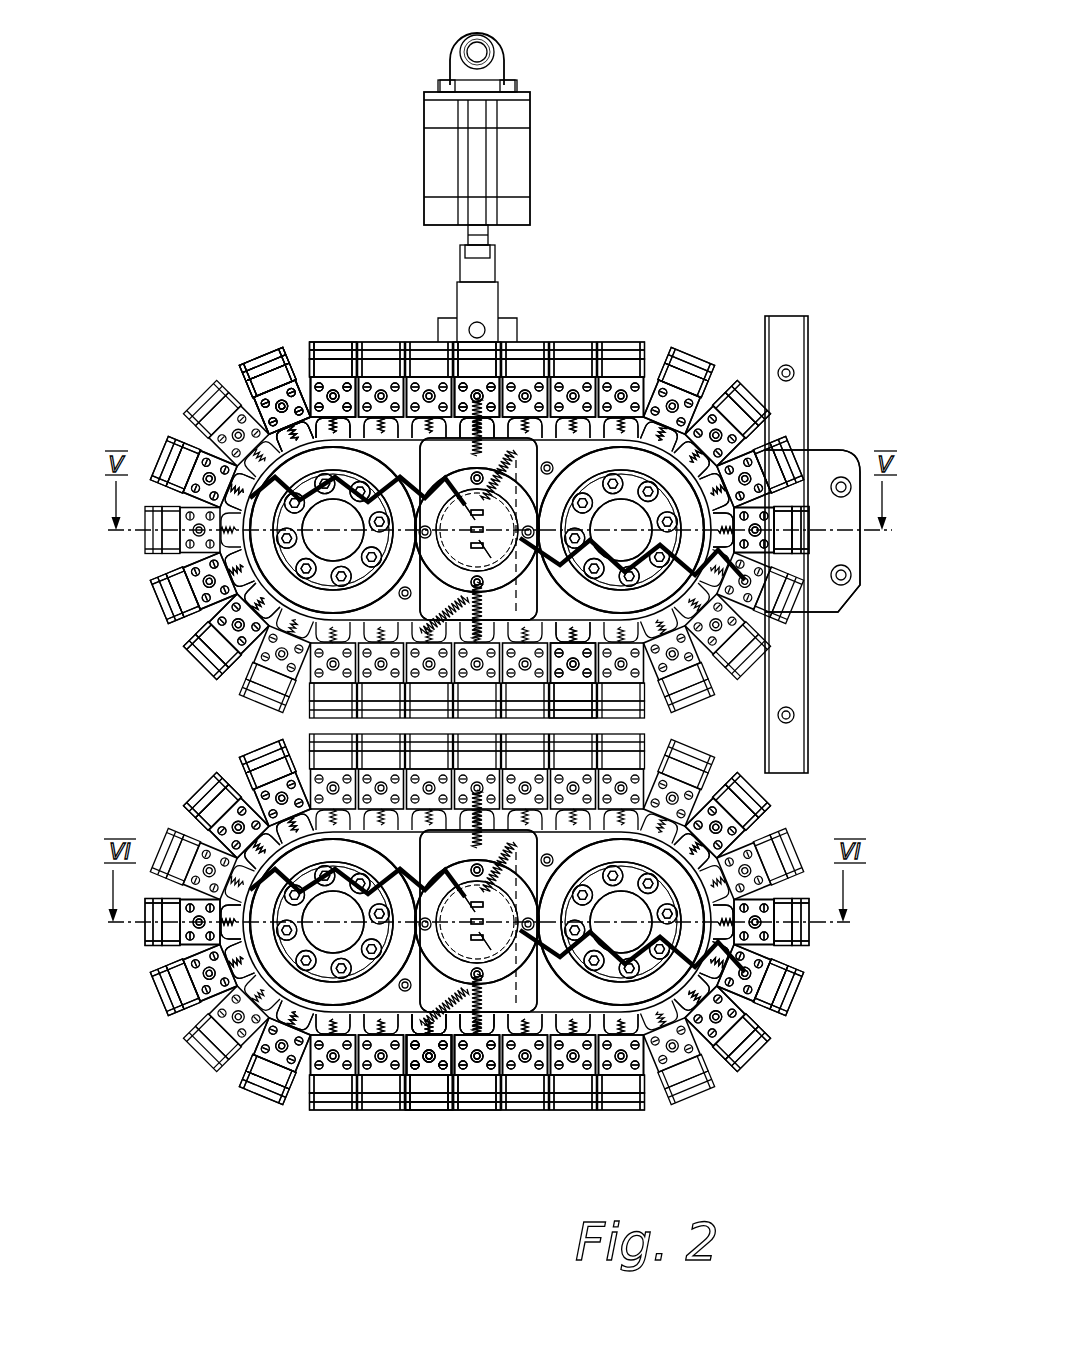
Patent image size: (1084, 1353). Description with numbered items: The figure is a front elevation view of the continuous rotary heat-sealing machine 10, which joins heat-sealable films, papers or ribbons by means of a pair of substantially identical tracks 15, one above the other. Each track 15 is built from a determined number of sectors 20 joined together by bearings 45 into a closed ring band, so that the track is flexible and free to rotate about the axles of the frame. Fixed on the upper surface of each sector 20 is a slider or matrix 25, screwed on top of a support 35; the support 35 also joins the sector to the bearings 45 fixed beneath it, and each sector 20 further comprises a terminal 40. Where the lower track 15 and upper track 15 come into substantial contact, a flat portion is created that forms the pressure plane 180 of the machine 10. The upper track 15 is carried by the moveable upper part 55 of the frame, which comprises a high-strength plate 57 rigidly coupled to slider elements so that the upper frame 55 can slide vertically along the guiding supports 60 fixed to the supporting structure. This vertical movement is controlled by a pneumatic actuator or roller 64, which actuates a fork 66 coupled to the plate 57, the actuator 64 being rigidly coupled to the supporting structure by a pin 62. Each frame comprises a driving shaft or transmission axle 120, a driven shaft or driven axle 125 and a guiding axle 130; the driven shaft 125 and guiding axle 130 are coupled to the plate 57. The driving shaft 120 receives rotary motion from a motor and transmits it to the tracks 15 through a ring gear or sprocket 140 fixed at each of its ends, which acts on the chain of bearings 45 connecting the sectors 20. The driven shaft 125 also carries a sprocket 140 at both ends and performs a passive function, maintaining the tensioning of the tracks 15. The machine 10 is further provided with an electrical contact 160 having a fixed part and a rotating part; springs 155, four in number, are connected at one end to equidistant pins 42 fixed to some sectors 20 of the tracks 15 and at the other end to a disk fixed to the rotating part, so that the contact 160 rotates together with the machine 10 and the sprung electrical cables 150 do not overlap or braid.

The continuous rotary heat-sealing machine 10 is at (253, 180).
The track 15 is at (650, 300).
The sector 20 is at (238, 374).
The slider or matrix 25 is at (257, 367).
The support 35 is at (273, 367).
The terminal 40 is at (280, 392).
The pin 42 is at (481, 393).
The bearing 45 is at (650, 383).
The moveable upper part of the frame 55 is at (876, 605).
The plate 57 is at (832, 463).
The guiding support 60 is at (783, 743).
The pin 62 is at (470, 50).
The pneumatic actuator or roller 64 is at (445, 160).
The fork 66 is at (485, 268).
The driving shaft or transmission axle 120 is at (695, 598).
The driven shaft or driven axle 125 is at (333, 547).
The guiding axle 130 is at (450, 458).
The ring gear or sprocket 140 is at (692, 435).
The sprung electrical cable 150 is at (342, 450).
The spring 155 is at (720, 418).
The electrical contact 160 is at (445, 486).
The pressure plane 180 is at (296, 726).